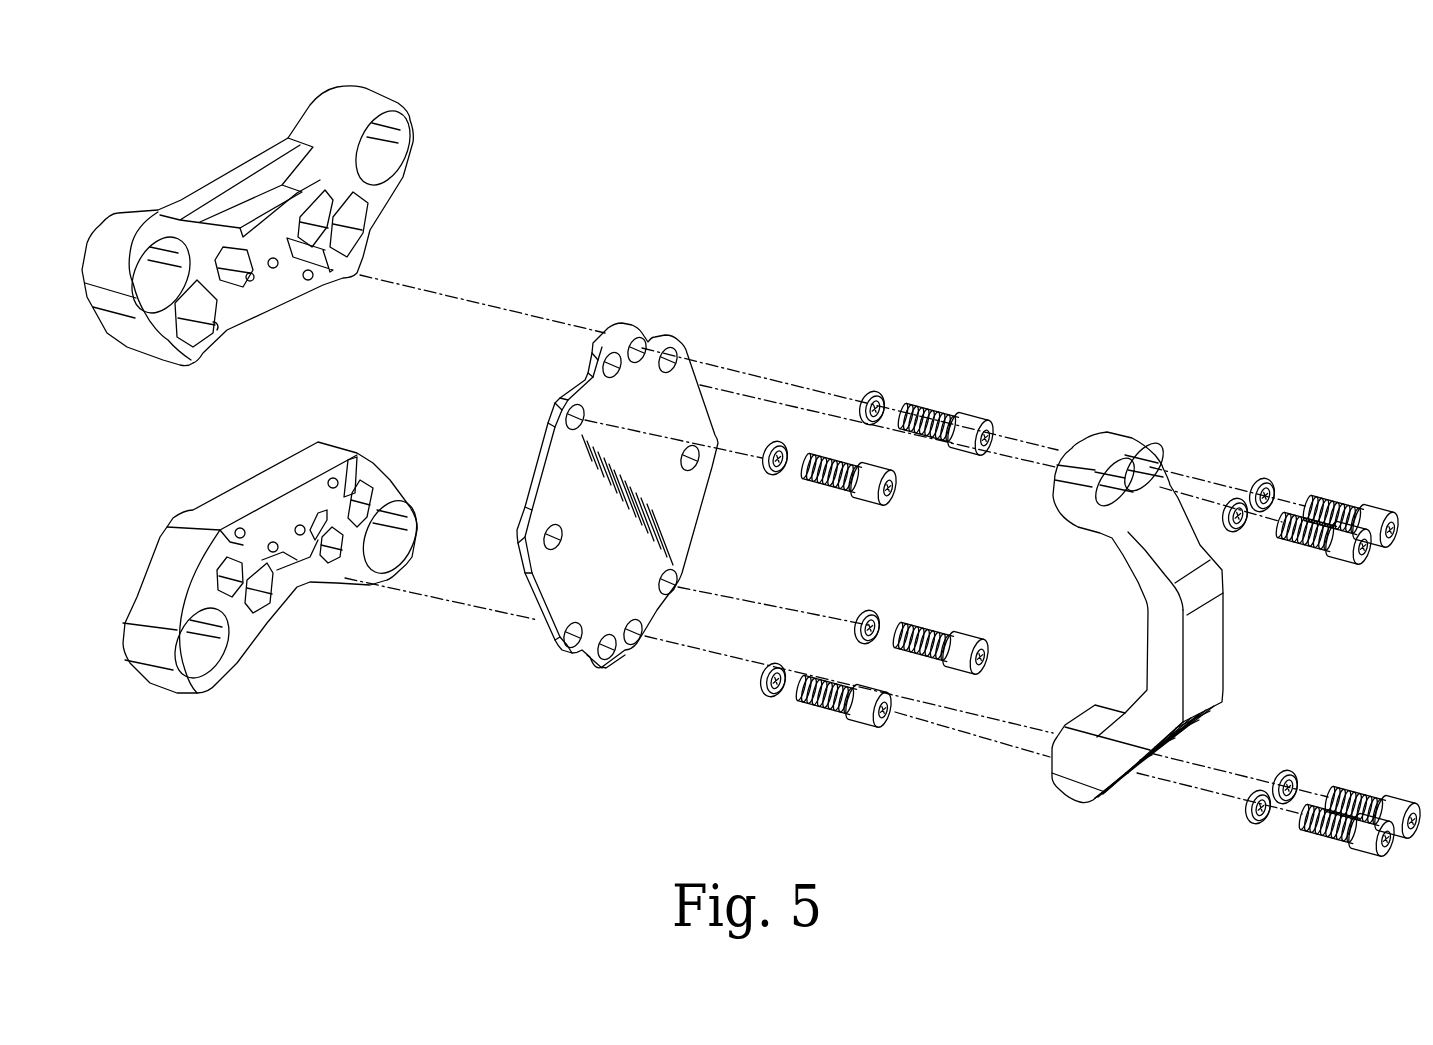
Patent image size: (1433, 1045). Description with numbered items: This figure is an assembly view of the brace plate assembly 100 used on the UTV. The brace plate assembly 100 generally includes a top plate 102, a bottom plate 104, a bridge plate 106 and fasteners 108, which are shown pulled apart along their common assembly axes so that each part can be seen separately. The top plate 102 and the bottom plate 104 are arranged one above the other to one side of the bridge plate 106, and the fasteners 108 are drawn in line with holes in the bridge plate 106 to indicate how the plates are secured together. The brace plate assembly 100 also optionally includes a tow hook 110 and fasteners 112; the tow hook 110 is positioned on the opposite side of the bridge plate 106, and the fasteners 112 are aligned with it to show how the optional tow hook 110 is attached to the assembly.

The brace plate assembly 100 is at (1185, 144).
The top plate 102 is at (372, 97).
The bottom plate 104 is at (373, 475).
The bridge plate 106 is at (673, 342).
The fasteners 108 is at (923, 412).
The tow hook 110 is at (1112, 436).
The fasteners 112 is at (1337, 507).